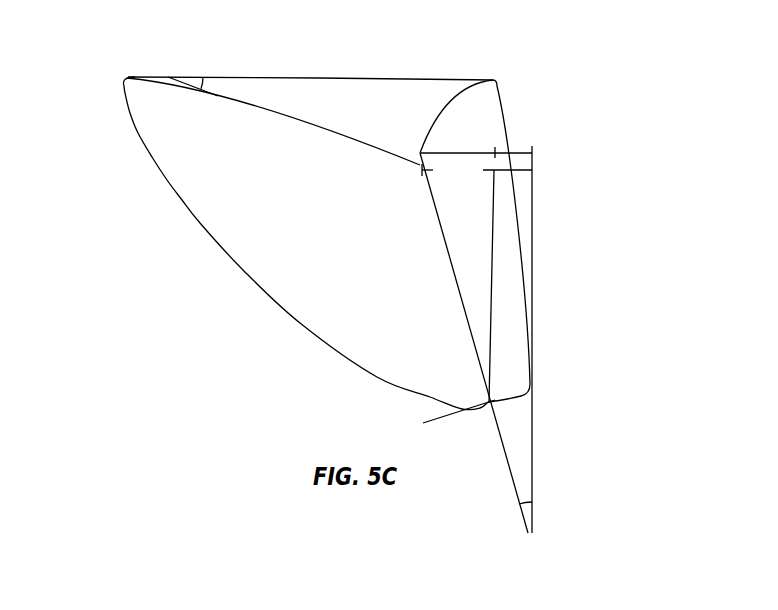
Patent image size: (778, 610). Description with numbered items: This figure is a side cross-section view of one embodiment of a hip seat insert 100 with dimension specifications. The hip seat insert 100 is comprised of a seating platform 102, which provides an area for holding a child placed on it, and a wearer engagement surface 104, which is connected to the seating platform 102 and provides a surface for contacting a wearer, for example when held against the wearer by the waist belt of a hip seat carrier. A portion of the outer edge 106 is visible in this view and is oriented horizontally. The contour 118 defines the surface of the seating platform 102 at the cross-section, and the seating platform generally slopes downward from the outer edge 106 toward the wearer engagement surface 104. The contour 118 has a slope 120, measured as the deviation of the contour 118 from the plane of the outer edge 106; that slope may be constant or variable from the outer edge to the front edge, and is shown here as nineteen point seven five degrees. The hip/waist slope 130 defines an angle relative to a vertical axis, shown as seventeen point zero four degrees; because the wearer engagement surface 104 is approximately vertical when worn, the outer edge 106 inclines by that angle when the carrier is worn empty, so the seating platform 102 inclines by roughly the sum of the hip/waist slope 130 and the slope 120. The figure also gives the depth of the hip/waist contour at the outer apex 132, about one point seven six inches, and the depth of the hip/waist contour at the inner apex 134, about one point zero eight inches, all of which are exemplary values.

The hip seat insert 100 is at (558, 73).
The seating platform 102 is at (317, 97).
The wearer engagement surface 104 is at (487, 110).
The outer edge 106 is at (422, 78).
The contour 118 is at (338, 135).
The slope 120 is at (228, 76).
The hip/waist slope 130 is at (532, 473).
The depth of hip/waist contour at outer apex 132 is at (483, 140).
The depth of hip/waist contour at inner apex 134 is at (455, 180).